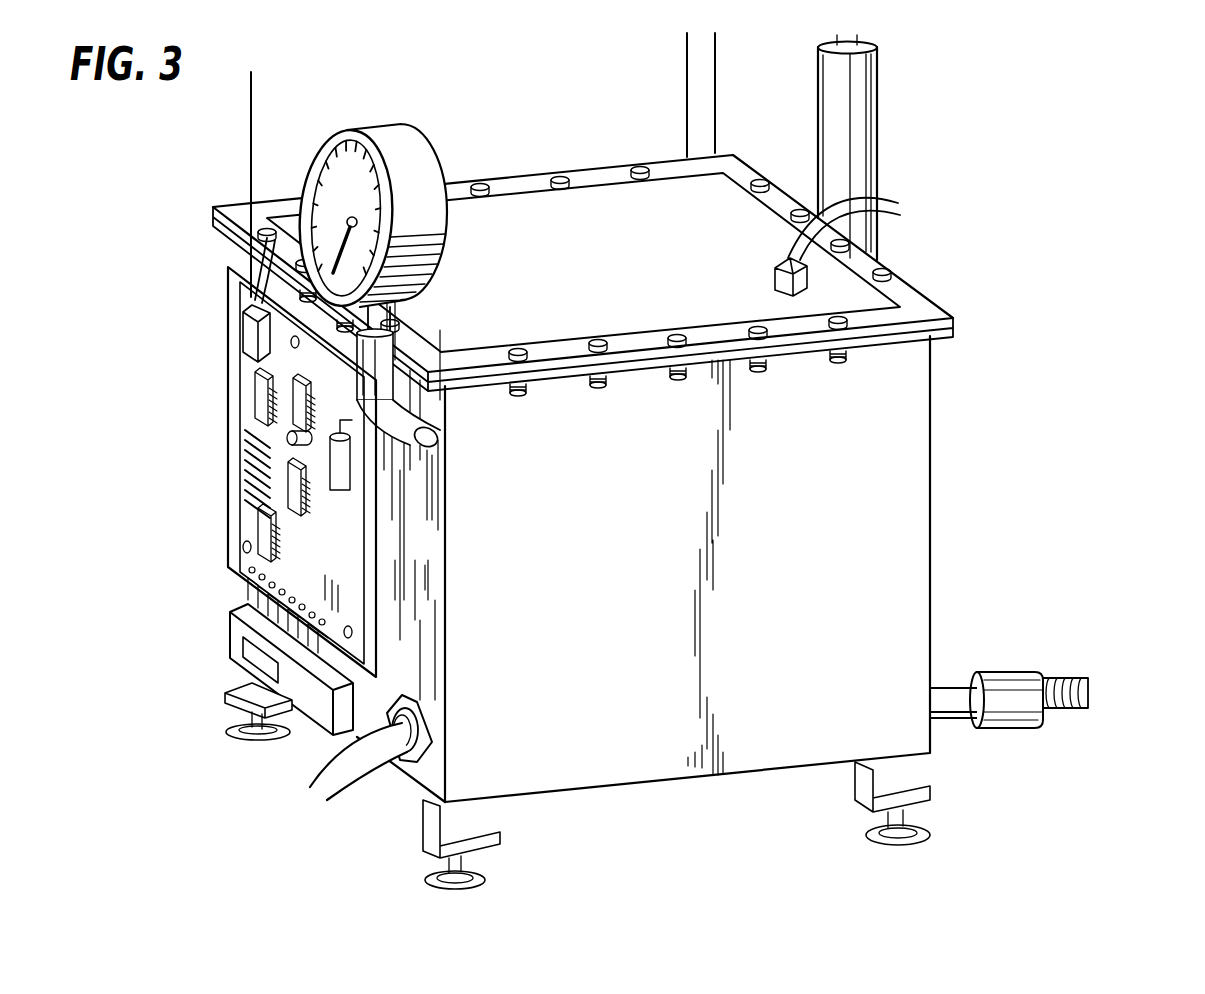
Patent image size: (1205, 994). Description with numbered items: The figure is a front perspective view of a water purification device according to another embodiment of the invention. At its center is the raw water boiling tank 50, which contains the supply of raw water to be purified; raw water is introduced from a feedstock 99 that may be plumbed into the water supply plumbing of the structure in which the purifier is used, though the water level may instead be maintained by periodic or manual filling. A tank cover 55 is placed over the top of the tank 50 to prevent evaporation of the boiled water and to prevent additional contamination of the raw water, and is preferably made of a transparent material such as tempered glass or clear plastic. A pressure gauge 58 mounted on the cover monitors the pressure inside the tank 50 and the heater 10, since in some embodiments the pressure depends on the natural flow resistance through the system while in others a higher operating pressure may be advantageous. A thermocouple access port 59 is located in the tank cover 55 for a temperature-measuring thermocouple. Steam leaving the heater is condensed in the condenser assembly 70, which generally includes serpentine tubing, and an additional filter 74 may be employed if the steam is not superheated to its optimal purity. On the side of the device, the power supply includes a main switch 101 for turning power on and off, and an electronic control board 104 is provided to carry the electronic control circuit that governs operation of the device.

The condenser assembly 70 is at (551, 96).
The tank cover 55 is at (535, 315).
The additional filter 74 is at (845, 118).
The thermocouple access port 59 is at (775, 276).
The raw water boiling tank 50 is at (627, 723).
The feedstock 99 is at (1098, 693).
The heater 10 is at (415, 762).
The pressure gauge 58 is at (338, 204).
The electronic control board 104 is at (284, 365).
The main switch 101 is at (256, 640).